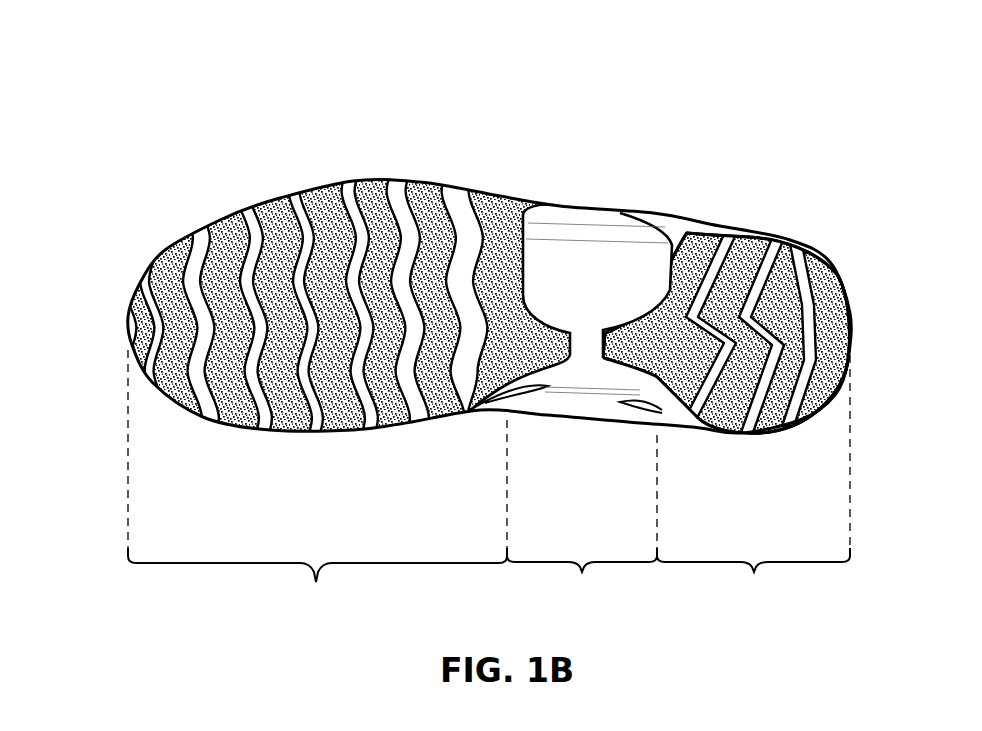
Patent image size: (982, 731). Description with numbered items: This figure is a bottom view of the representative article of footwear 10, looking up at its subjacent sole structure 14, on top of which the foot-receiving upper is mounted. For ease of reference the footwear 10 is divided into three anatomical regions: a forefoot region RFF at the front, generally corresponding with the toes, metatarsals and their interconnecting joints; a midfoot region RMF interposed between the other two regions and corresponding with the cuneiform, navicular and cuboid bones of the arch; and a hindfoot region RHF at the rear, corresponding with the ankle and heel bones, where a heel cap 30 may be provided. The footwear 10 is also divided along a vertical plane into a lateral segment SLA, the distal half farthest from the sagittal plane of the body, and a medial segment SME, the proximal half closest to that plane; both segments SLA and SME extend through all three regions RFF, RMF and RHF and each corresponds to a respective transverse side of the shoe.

The article of footwear 10 is at (253, 97).
The sole structure 14 is at (243, 202).
The heel cap 30 is at (138, 268).
The lateral segment SLA is at (490, 158).
The medial segment SME is at (545, 428).
The forefoot region RFF is at (317, 488).
The midfoot region RMF is at (582, 517).
The hindfoot region RHF is at (726, 423).